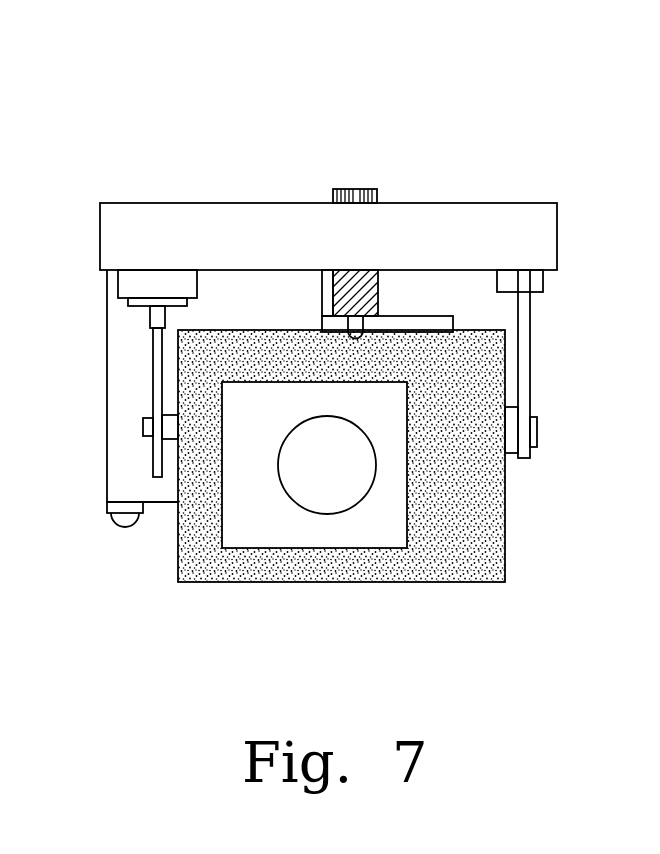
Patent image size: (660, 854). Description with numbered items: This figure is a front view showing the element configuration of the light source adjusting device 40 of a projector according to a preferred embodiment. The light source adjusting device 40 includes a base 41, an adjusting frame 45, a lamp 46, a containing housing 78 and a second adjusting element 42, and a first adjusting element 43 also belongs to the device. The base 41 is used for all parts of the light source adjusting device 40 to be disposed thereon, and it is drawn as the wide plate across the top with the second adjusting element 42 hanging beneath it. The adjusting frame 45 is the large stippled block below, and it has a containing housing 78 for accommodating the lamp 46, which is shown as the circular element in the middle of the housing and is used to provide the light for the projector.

The light source adjusting device 40 is at (500, 100).
The base 41 is at (465, 225).
The second adjusting element 42 is at (353, 290).
The first adjusting element 43 is at (355, 189).
The adjusting frame 45 is at (462, 557).
The lamp 46 is at (312, 478).
The containing housing 78 is at (378, 528).